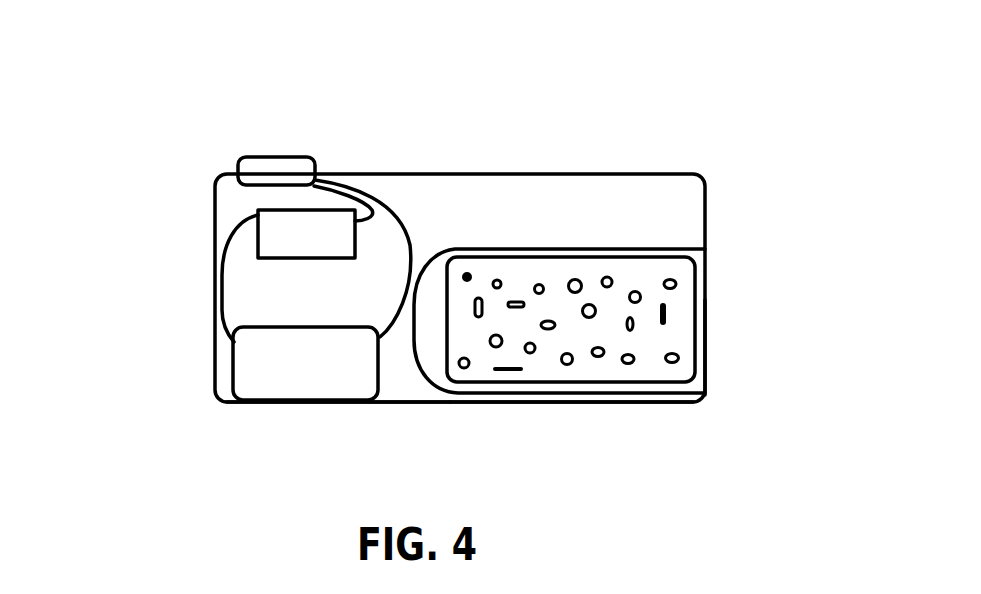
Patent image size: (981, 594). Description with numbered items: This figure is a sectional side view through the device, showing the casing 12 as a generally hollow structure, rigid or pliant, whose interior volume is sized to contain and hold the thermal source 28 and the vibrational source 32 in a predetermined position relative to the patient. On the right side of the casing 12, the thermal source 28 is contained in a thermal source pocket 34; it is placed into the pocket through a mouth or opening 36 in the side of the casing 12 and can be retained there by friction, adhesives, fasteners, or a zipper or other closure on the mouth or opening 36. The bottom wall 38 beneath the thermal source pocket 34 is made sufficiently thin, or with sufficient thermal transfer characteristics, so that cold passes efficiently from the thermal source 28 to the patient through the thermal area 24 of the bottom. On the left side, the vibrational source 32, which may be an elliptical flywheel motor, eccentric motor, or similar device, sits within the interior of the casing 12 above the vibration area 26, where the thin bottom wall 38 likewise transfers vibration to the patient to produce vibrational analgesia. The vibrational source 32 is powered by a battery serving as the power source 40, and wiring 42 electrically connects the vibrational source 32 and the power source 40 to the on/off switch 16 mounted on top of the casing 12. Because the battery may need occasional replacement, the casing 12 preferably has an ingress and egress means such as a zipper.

The casing 12 is at (682, 183).
The on/off switch 16 is at (268, 168).
The thermal area 24 is at (587, 403).
The vibration area 26 is at (310, 405).
The thermal source 28 is at (639, 333).
The vibrational source 32 is at (260, 373).
The thermal source pocket 34 is at (703, 260).
The mouth or opening 36 is at (728, 348).
The bottom wall 38 is at (527, 393).
The power source 40 is at (302, 232).
The wiring 42 is at (220, 273).